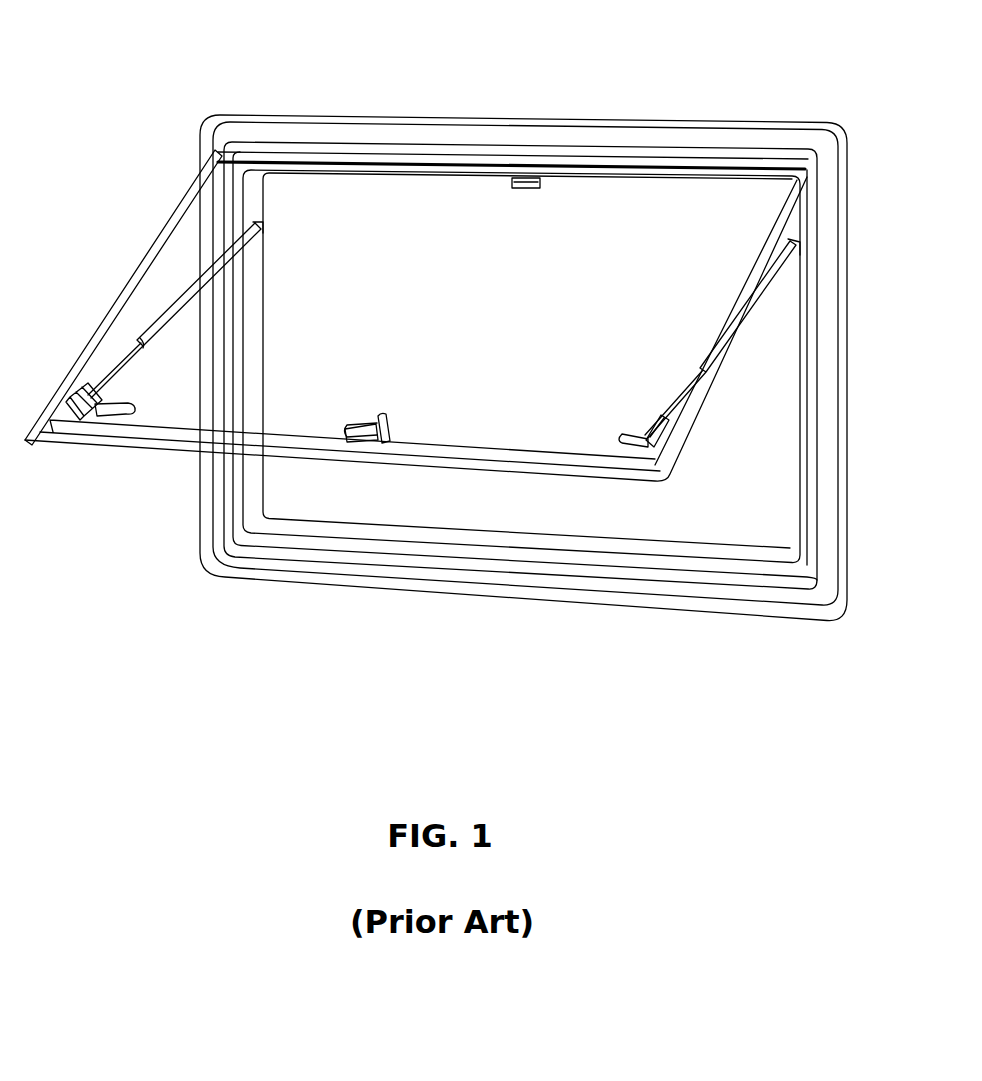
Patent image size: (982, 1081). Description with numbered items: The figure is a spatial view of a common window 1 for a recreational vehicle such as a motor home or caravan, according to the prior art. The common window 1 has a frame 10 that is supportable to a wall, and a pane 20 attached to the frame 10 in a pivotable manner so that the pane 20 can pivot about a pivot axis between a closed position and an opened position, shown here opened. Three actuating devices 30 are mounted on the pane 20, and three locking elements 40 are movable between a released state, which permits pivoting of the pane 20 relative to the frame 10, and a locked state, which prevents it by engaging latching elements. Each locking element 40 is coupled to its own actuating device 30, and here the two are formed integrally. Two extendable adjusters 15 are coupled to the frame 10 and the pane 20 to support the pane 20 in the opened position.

The common window 1 is at (403, 207).
The frame 10 is at (545, 133).
The pane 20 is at (613, 213).
The extendable adjusters 15 is at (197, 293).
The actuating devices 30 is at (127, 415).
The locking elements 40 is at (78, 410).